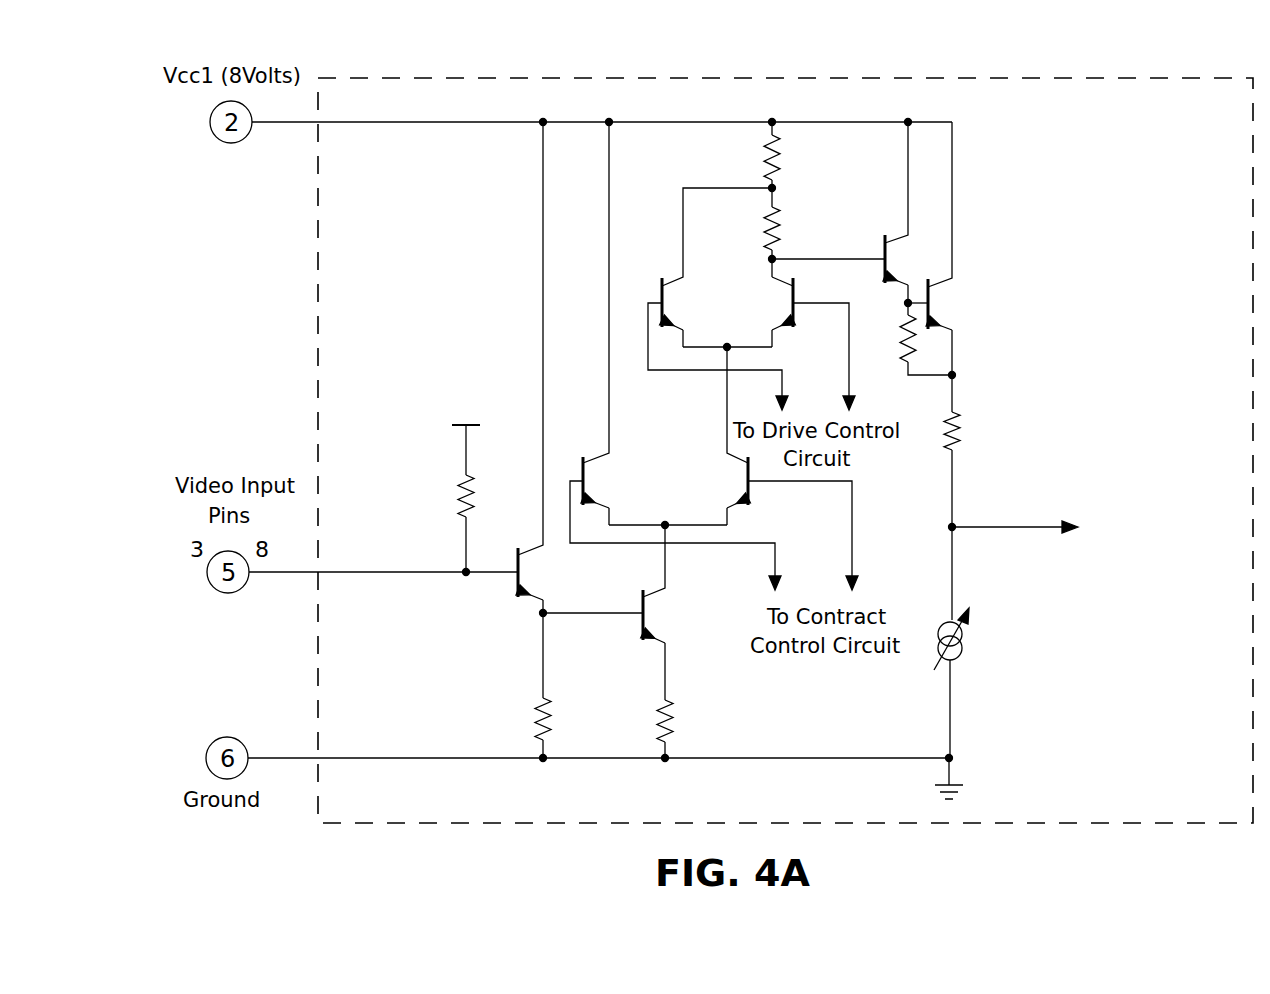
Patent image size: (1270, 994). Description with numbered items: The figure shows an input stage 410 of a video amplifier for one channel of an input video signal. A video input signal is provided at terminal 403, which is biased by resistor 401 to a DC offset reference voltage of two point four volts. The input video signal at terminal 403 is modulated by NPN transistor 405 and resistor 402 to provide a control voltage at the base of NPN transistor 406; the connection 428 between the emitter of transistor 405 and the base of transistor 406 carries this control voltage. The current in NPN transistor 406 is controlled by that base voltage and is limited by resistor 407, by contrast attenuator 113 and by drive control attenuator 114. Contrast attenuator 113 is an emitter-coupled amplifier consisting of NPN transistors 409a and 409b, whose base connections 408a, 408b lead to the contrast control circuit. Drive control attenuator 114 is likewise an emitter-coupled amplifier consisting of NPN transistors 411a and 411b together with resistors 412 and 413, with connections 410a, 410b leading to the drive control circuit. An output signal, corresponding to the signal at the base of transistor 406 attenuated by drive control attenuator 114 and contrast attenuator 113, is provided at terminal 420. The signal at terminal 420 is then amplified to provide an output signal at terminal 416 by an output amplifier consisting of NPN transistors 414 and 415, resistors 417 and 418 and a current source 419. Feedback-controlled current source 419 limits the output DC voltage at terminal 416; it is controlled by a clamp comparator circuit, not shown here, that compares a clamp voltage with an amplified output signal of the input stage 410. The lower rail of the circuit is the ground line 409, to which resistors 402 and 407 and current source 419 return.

The input stage 410 is at (1102, 54).
The resistor 413 is at (776, 158).
The resistor 412 is at (776, 224).
The NPN transistor 414 is at (883, 240).
The terminal 420 is at (822, 258).
The NPN transistor 411a is at (660, 284).
The NPN transistor 411b is at (800, 325).
The drive control attenuator 114 is at (700, 330).
The resistor 417 is at (903, 320).
The NPN transistor 415 is at (943, 318).
The output to drive control circuit 410a is at (690, 372).
The output to drive control circuit 410b is at (851, 376).
The resistor 418 is at (956, 413).
The terminal 416 is at (1015, 529).
The NPN transistor 409a is at (582, 460).
The NPN transistor 409b is at (752, 495).
The contrast attenuator 113 is at (645, 514).
The output to contract control circuit 408a is at (800, 556).
The output to contract control circuit 408b is at (876, 552).
The resistor 401 is at (468, 476).
The terminal 403 is at (385, 575).
The NPN transistor 405 is at (522, 573).
The connection between Q1 emitter and Q2 base 428 is at (565, 616).
The NPN transistor 406 is at (650, 623).
The resistor 402 is at (545, 698).
The resistor 407 is at (667, 698).
The ground line 409 is at (410, 761).
The current source 419 is at (963, 645).